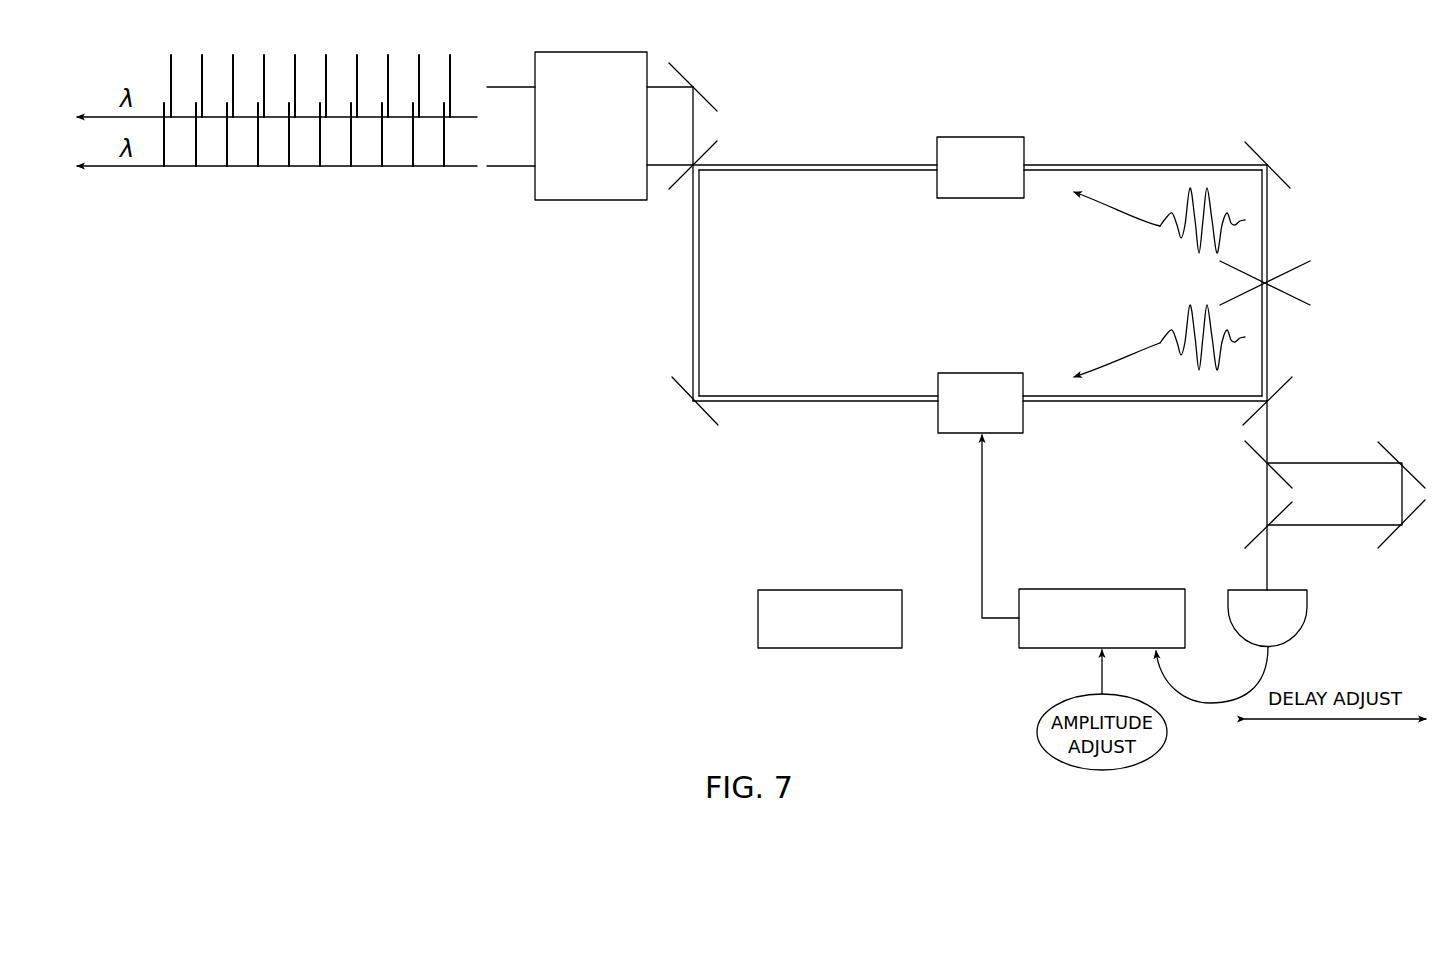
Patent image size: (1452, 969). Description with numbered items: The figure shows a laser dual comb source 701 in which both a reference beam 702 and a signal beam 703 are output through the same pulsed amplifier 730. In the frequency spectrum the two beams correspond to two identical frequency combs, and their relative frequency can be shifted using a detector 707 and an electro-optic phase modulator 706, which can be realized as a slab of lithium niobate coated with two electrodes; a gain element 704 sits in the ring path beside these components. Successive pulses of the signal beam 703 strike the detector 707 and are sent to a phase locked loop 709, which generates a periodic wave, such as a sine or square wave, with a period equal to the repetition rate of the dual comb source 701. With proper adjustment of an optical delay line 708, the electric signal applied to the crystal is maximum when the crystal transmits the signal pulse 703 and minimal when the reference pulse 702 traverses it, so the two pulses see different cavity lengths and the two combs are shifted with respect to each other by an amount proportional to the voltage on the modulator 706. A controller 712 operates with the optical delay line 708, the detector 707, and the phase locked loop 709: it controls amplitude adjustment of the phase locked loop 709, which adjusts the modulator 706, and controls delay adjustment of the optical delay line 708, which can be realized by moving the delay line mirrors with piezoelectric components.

The dual comb source 701 is at (1298, 50).
The reference beam 702 is at (1120, 206).
The signal beam 703 is at (1122, 364).
The gain element 704 is at (981, 137).
The electro-optic phase modulator 706 is at (981, 373).
The detector 707 is at (1297, 622).
The optical delay line 708 is at (1338, 462).
The phase locked loop 709 is at (1102, 589).
The controller 712 is at (828, 590).
The pulsed amplifier 730 is at (591, 52).